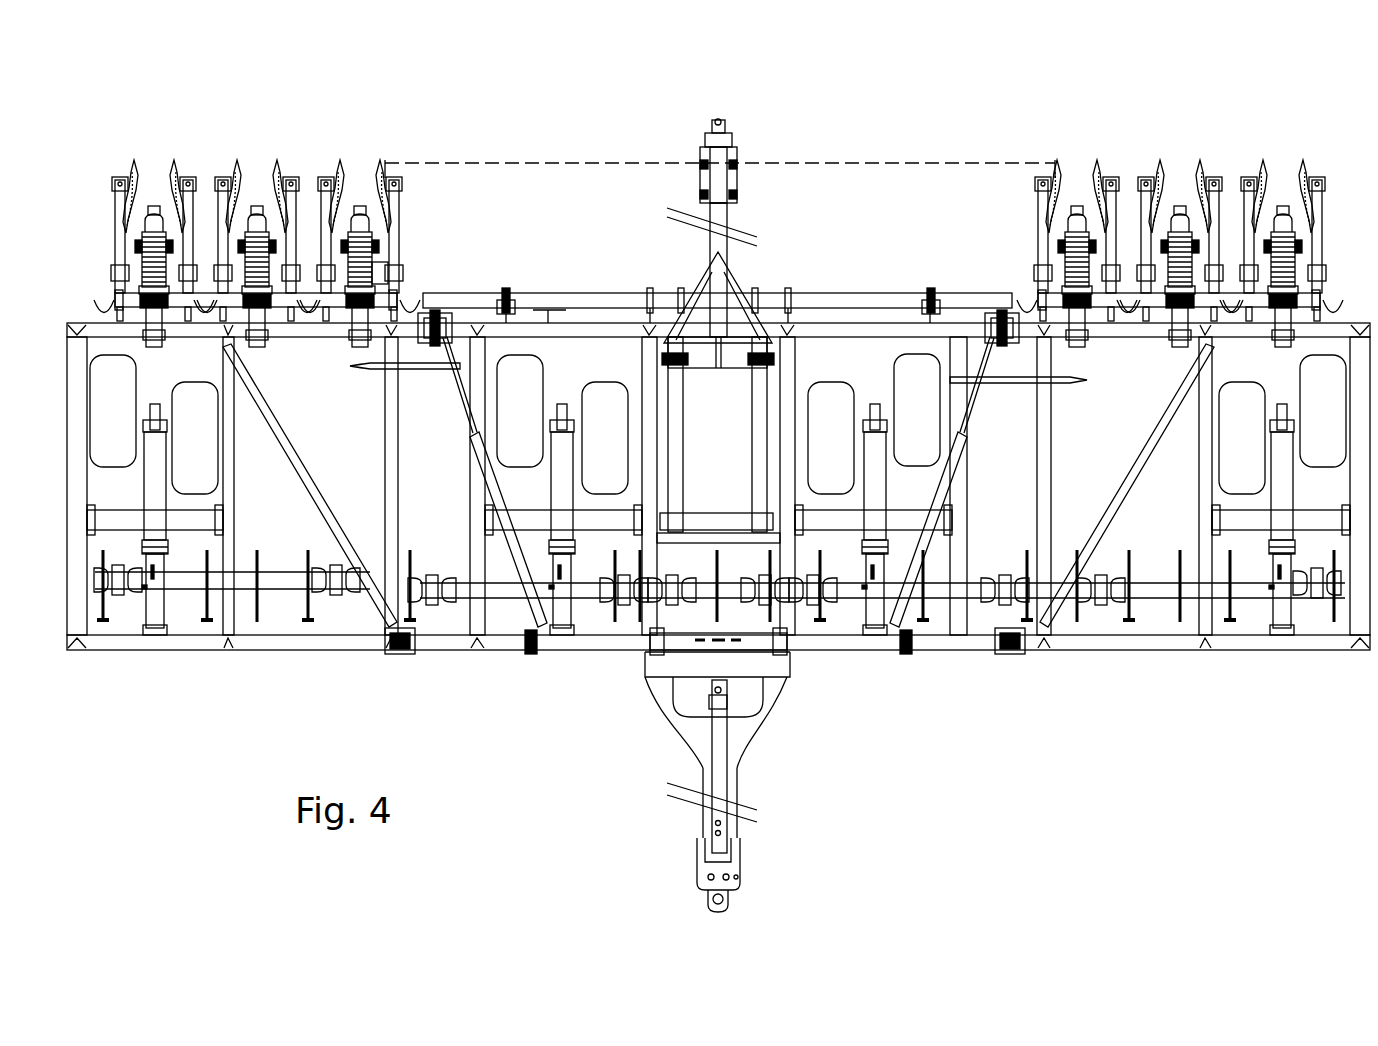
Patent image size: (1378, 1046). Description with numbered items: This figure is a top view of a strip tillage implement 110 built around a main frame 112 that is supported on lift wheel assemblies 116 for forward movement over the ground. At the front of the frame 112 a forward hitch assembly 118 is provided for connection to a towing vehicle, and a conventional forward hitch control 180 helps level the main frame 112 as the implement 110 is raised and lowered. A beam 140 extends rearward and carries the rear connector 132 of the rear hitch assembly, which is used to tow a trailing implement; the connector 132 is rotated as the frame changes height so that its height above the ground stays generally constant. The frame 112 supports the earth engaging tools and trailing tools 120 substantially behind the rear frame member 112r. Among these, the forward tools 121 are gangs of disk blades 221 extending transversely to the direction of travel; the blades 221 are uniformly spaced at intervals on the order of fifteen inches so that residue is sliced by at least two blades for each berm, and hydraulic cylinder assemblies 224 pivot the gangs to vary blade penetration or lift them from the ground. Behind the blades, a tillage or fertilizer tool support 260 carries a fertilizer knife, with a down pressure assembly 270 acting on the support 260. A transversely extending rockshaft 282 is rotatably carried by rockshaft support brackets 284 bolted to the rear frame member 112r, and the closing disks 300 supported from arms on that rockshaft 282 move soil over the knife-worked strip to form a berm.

The strip tillage implement 110 is at (1262, 130).
The main frame 112 is at (975, 493).
The rear frame member 112r is at (593, 332).
The lift wheel assemblies 116 is at (530, 407).
The forward hitch assembly 118 is at (697, 885).
The earth engaging tools and trailing tools 120 is at (112, 318).
The forward tools 121 is at (830, 610).
The rear connector 132 is at (722, 122).
The beam 140 is at (727, 222).
The forward hitch control 180 is at (748, 605).
The disk blades 221 is at (207, 620).
The hydraulic cylinder assemblies 224 is at (153, 590).
The tillage or fertilizer tool support 260 is at (257, 207).
The down pressure assembly 270 is at (347, 240).
The rockshaft 282 is at (382, 272).
The rockshaft support brackets 284 is at (506, 313).
The closing disks 300 is at (173, 162).